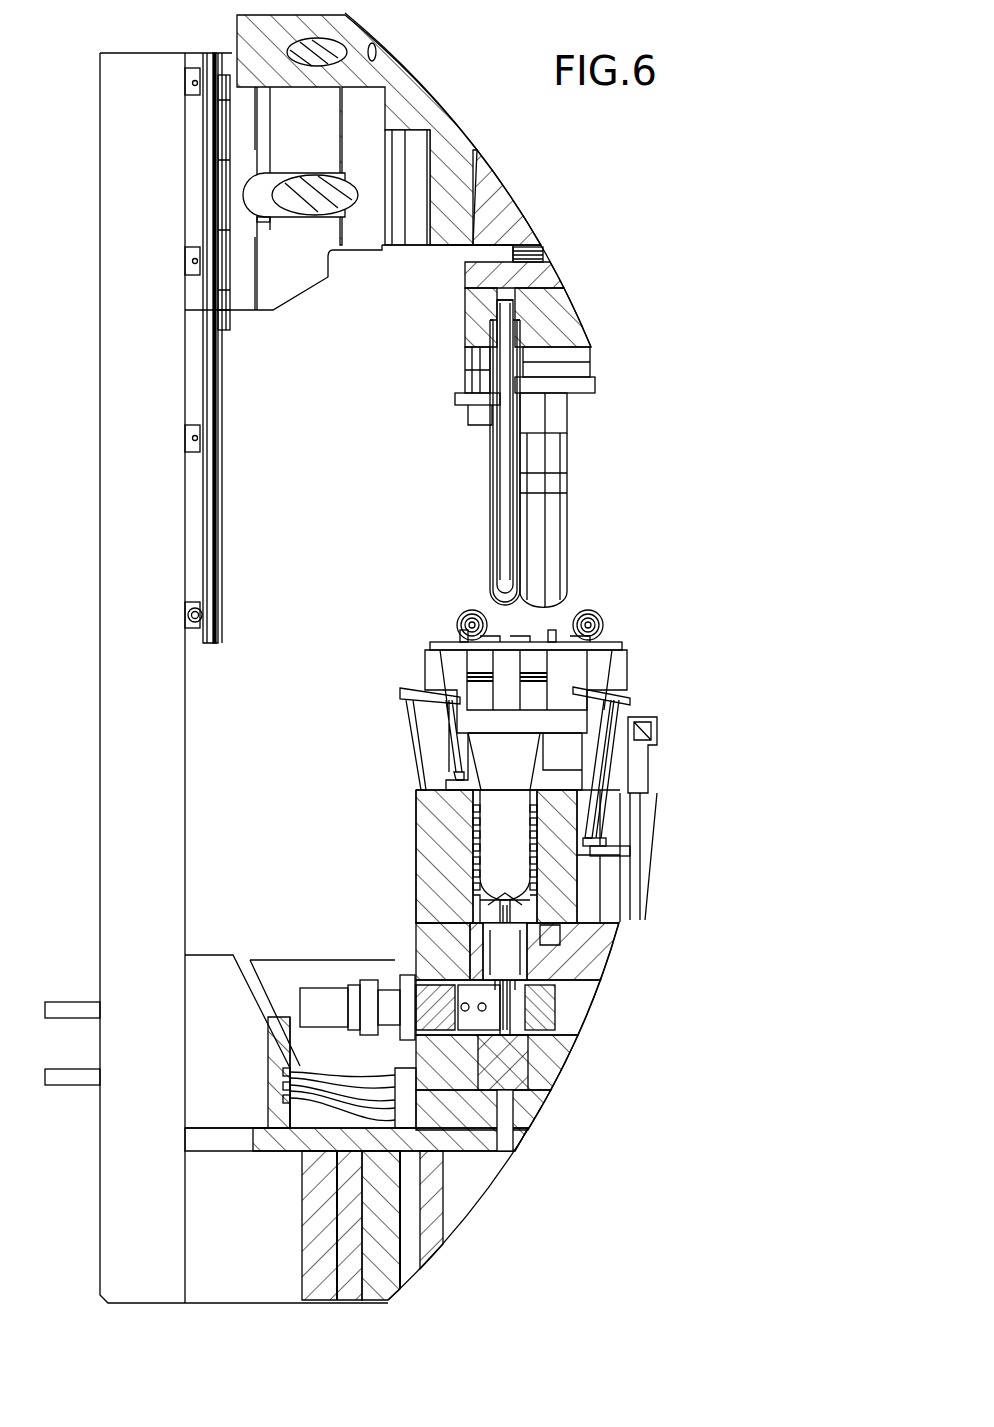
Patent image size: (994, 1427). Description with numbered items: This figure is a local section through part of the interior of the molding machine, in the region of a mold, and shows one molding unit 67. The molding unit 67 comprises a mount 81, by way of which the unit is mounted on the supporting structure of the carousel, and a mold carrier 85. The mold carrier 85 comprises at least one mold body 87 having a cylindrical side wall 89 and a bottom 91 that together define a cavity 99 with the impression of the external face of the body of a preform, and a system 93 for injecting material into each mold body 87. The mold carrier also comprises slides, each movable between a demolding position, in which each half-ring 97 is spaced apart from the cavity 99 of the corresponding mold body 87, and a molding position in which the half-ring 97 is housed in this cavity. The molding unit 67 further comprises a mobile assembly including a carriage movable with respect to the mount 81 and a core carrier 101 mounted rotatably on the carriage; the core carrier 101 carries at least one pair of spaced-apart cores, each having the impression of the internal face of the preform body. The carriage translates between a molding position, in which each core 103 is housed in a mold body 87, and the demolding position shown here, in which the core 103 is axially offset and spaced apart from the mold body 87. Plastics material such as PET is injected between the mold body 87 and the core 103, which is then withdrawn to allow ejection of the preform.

The molding unit 67 is at (490, 426).
The core carrier 101 is at (487, 468).
The core 103 is at (490, 537).
The half-ring 97 is at (525, 697).
The cavity 99 is at (502, 820).
The mold carrier 85 is at (470, 849).
The mold body 87 is at (473, 838).
The cylindrical side wall 89 is at (478, 872).
The bottom 91 is at (478, 912).
The system for injecting material 93 is at (515, 963).
The mount 81 is at (585, 1000).